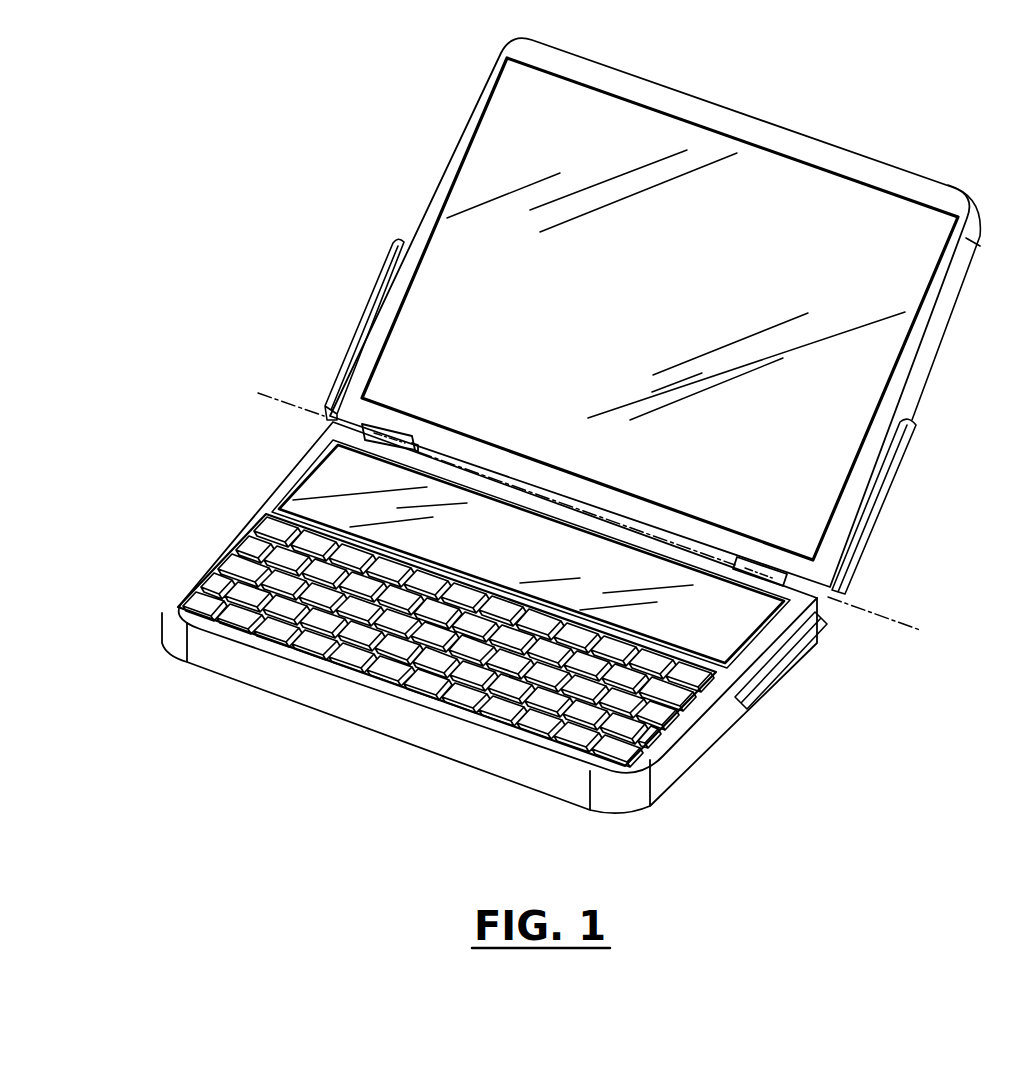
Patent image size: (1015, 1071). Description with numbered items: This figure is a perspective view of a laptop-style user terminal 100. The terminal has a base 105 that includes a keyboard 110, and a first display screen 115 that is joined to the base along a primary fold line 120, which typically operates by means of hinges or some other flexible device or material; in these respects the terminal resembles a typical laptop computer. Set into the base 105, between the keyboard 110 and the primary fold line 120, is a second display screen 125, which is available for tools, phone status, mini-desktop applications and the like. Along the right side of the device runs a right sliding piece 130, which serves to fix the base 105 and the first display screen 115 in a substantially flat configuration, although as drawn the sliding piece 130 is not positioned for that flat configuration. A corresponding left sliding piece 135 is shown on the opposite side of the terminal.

The user terminal 100 is at (530, 425).
The base 105 is at (178, 590).
The keyboard 110 is at (243, 550).
The first display screen 115 is at (609, 293).
The primary fold line 120 is at (887, 617).
The second display screen 125 is at (482, 556).
The right sliding piece 130 is at (882, 498).
The left sliding piece 135 is at (357, 327).